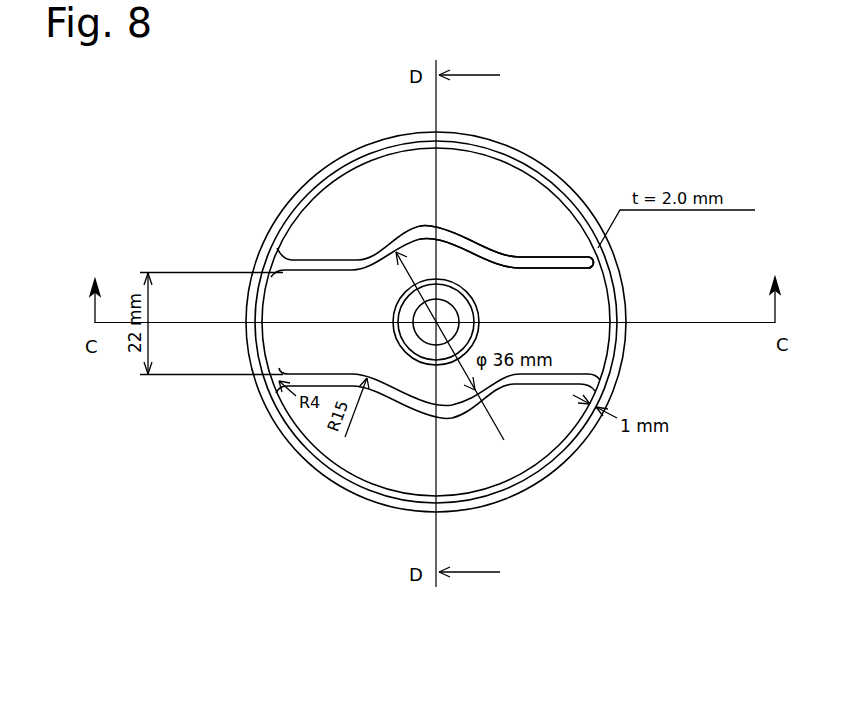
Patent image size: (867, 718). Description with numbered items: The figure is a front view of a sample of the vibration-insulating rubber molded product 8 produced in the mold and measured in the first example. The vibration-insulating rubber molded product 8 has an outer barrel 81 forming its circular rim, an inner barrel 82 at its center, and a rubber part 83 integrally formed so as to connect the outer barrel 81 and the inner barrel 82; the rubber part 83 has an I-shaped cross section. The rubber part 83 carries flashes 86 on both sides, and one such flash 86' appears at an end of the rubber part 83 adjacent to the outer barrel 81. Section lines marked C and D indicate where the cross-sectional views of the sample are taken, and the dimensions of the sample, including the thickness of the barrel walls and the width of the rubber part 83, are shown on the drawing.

The vibration-insulating rubber molded product 8 is at (612, 118).
The outer barrel 81 is at (565, 458).
The inner barrel 82 is at (448, 292).
The rubber part 83 is at (305, 285).
The flash 86 is at (507, 231).
The flash 86' is at (631, 270).